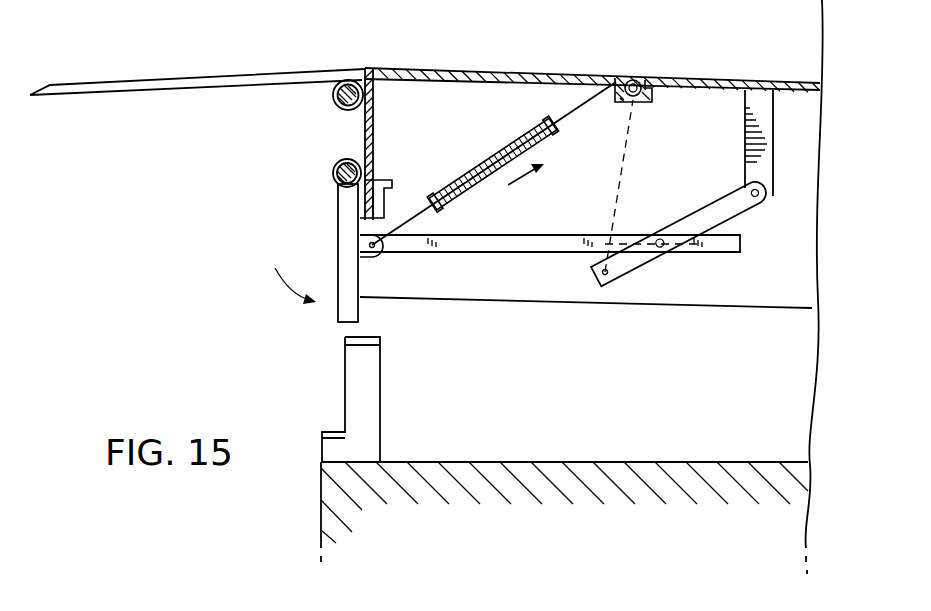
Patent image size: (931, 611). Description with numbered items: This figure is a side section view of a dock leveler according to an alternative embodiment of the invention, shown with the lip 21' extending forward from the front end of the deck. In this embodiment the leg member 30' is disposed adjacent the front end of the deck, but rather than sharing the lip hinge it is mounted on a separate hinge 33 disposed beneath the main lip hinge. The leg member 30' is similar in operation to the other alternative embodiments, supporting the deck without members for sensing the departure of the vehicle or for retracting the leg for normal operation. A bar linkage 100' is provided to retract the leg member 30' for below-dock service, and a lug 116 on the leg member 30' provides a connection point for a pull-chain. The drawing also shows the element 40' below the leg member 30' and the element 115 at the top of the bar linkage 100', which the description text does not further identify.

The lip 21' is at (197, 54).
The hinge 33 is at (340, 168).
The leg member 30' is at (302, 253).
The sill 40' is at (326, 399).
The bracket 115 is at (628, 78).
The lug 116 is at (372, 256).
The bar linkage 100' is at (565, 225).